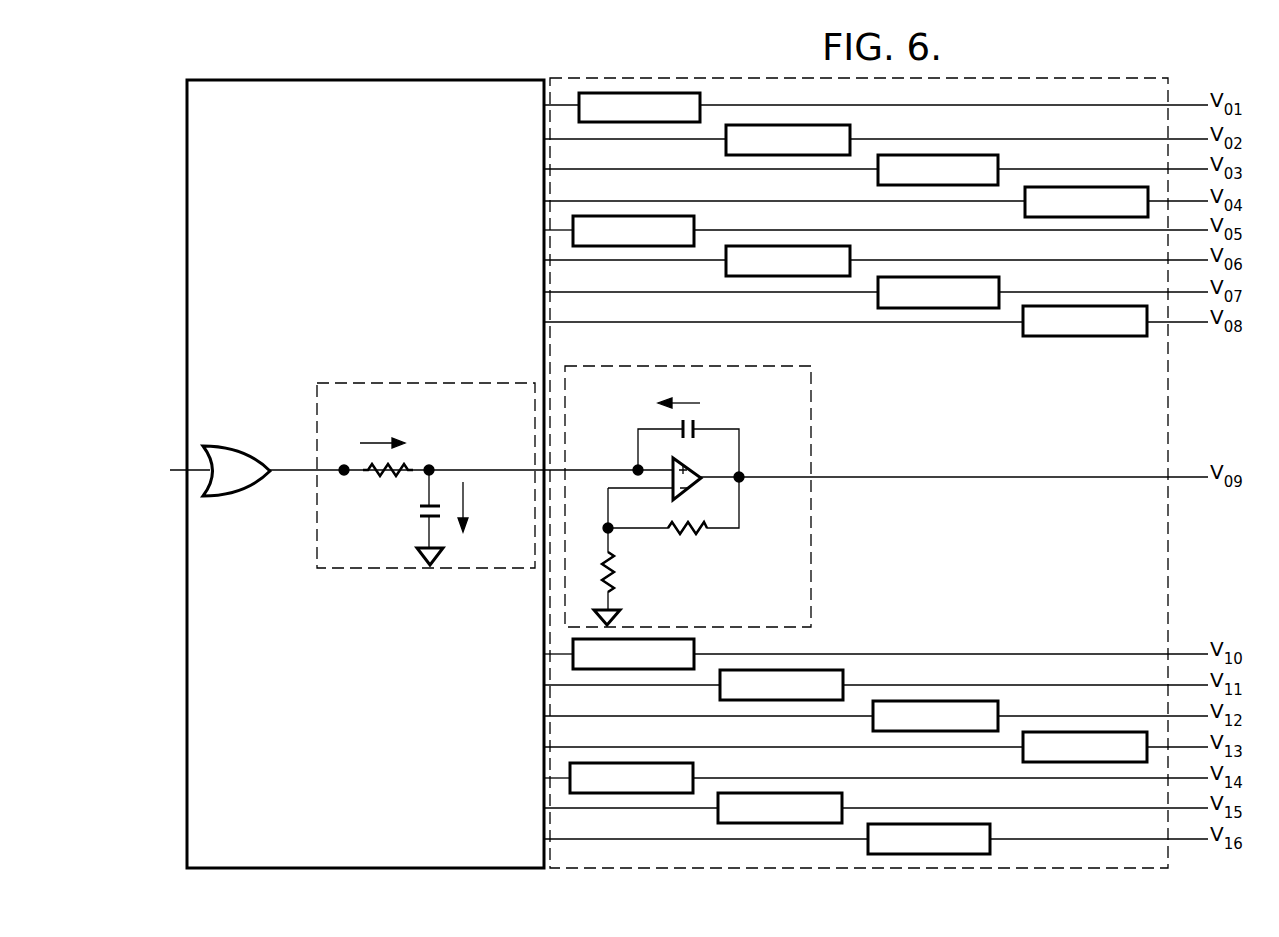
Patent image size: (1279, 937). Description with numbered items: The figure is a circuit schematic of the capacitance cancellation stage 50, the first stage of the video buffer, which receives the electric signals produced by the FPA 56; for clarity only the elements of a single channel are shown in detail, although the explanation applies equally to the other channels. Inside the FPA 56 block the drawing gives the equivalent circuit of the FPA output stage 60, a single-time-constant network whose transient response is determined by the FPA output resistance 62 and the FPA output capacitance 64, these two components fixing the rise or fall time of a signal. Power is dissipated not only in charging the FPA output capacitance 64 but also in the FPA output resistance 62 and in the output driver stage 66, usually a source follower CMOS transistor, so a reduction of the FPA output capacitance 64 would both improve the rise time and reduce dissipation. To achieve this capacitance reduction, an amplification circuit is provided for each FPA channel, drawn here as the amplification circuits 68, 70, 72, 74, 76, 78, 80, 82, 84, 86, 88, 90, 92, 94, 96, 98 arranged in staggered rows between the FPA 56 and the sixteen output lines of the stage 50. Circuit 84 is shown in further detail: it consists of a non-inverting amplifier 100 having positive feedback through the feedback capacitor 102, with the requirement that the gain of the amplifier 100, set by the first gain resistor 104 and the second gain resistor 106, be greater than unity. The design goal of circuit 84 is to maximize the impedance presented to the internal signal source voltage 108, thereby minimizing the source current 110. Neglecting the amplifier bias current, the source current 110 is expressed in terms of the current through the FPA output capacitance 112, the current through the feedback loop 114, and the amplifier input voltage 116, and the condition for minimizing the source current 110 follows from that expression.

The capacitance cancellation stage 50 is at (1168, 558).
The FPA 56 is at (551, 79).
The FPA output stage 60 is at (337, 569).
The FPA output resistance 62 is at (393, 478).
The FPA output capacitance 64 is at (433, 504).
The output driver stage 66 is at (256, 487).
The amplification circuit 68 is at (698, 92).
The amplification circuit 70 is at (850, 130).
The amplification circuit 72 is at (1000, 160).
The amplification circuit 74 is at (694, 218).
The amplification circuit 76 is at (1025, 213).
The amplification circuit 78 is at (850, 249).
The amplification circuit 80 is at (1000, 280).
The amplification circuit 82 is at (1023, 338).
The amplification circuit 84 is at (812, 410).
The amplification circuit 86 is at (695, 642).
The amplification circuit 88 is at (843, 673).
The amplification circuit 90 is at (998, 702).
The amplification circuit 92 is at (1023, 760).
The amplification circuit 94 is at (694, 764).
The amplification circuit 96 is at (842, 794).
The amplification circuit 98 is at (990, 827).
The non-inverting amplifier 100 is at (690, 477).
The feedback capacitor 102 is at (695, 425).
The first gain resistor 104 is at (703, 533).
The second gain resistor 106 is at (616, 565).
The internal signal source voltage 108 is at (344, 477).
The source current 110 is at (370, 442).
The current through the FPA output capacitance 112 is at (470, 512).
The current through the feedback loop 114 is at (700, 403).
The amplifier input voltage 116 is at (636, 465).